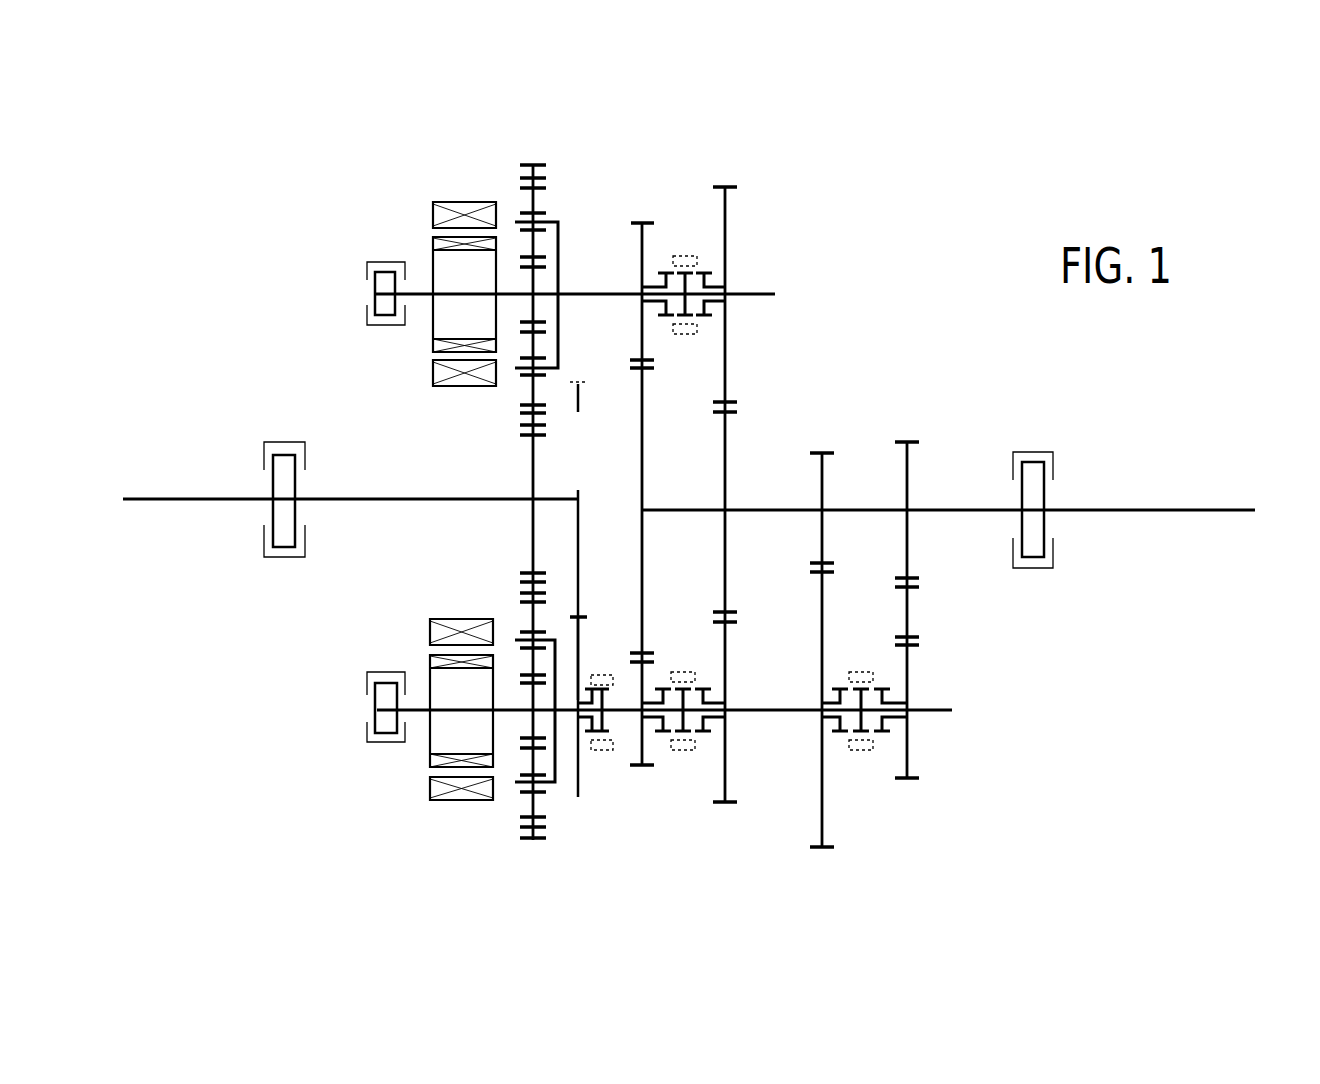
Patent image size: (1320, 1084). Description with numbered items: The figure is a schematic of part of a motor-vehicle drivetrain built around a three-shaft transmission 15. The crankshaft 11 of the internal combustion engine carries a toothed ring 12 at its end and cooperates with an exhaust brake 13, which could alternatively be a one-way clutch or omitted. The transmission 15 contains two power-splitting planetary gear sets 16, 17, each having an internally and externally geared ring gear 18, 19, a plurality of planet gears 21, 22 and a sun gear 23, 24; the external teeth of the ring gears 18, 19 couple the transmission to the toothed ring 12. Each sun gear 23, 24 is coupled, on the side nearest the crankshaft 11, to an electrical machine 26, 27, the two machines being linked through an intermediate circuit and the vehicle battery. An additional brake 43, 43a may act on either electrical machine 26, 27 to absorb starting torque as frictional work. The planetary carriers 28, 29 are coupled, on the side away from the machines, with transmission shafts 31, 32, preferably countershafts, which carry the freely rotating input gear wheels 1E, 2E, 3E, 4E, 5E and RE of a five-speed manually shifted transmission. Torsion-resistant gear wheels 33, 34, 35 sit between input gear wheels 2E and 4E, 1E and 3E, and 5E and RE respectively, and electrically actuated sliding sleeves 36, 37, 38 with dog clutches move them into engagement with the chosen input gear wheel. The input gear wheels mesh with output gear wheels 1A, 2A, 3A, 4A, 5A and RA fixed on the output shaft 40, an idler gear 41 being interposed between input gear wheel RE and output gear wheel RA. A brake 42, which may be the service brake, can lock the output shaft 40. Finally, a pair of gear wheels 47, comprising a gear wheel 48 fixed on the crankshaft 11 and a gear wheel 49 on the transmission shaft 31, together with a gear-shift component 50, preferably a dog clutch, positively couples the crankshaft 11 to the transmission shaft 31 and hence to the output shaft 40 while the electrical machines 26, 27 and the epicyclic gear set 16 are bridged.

The crankshaft 11 is at (180, 499).
The toothed ring 12 is at (527, 462).
The exhaust brake 13 is at (260, 548).
The transmission 15 is at (843, 292).
The planetary gear set 16 is at (538, 152).
The planetary gear set 17 is at (500, 838).
The ring gear 18 is at (520, 170).
The ring gear 19 is at (548, 836).
The planet gears 21 is at (545, 200).
The planet gears 22 is at (527, 803).
The sun gear 23 is at (527, 283).
The sun gear 24 is at (525, 695).
The electrical machine 26 is at (432, 242).
The electrical machine 27 is at (433, 756).
The planetary carrier 28 is at (560, 268).
The planetary carrier 29 is at (562, 675).
The transmission shaft 31 is at (598, 297).
The transmission shaft 32 is at (945, 715).
The gear wheel 33 is at (668, 255).
The gear wheel 34 is at (680, 695).
The gear wheel 35 is at (866, 694).
The sliding sleeve 36 is at (685, 335).
The sliding sleeve 37 is at (683, 751).
The sliding sleeve 38 is at (858, 752).
The output shaft 40 is at (1203, 509).
The idler gear 41 is at (912, 605).
The brake 42 is at (1045, 447).
The additional brake 43 is at (356, 272).
The additional brake 43a is at (353, 689).
The pair of gear wheels 47 is at (586, 553).
The gear wheel 48 is at (583, 525).
The gear wheel 49 is at (582, 646).
The gear-shift component 50 is at (598, 750).
The output gear wheel 1A is at (640, 413).
The output gear wheel 2A is at (565, 460).
The output gear wheel 3A is at (772, 425).
The output gear wheel 4A is at (777, 492).
The output gear wheel 5A is at (824, 506).
The output gear wheel RA is at (908, 495).
The input gear wheel 1E is at (641, 653).
The input gear wheel 2E is at (645, 342).
The input gear wheel 3E is at (725, 681).
The input gear wheel 4E is at (728, 325).
The input gear wheel 5E is at (819, 746).
The input gear wheel RE is at (909, 736).